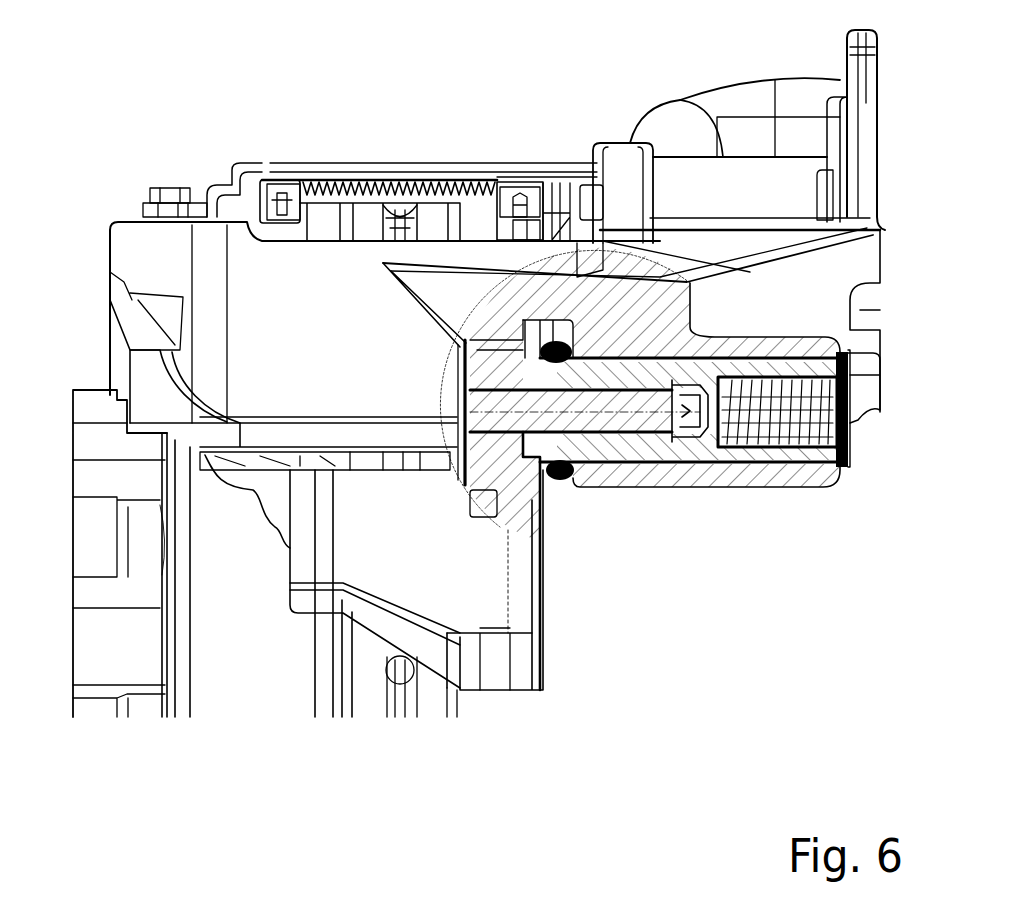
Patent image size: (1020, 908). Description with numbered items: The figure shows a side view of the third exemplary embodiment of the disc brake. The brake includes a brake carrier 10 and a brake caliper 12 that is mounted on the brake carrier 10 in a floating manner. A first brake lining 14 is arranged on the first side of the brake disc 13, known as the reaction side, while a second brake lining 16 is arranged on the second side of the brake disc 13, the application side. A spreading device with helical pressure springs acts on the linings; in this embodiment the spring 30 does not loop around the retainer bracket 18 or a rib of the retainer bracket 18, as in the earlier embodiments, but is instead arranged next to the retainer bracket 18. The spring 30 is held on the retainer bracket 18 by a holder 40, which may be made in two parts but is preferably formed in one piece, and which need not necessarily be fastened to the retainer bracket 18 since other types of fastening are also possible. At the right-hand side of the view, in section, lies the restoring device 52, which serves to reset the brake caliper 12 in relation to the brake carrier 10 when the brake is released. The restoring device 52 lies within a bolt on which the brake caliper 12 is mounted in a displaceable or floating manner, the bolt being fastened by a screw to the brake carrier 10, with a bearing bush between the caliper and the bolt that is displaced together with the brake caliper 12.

The brake carrier 10 is at (457, 607).
The brake caliper 12 is at (272, 270).
The brake disc 13 is at (147, 473).
The first brake lining 14 is at (323, 222).
The second brake lining 16 is at (475, 230).
The retainer bracket 18 is at (558, 163).
The spring 30 is at (450, 177).
The holder 40 is at (410, 175).
The restoring device 52 is at (852, 436).